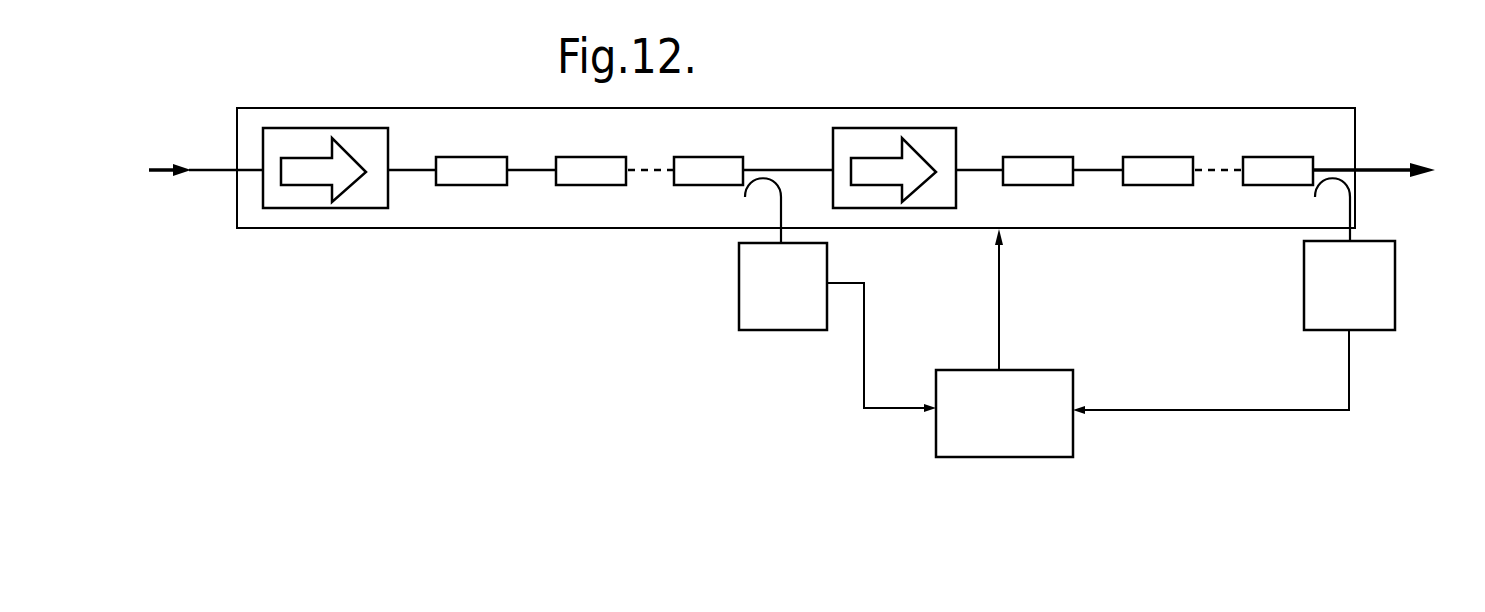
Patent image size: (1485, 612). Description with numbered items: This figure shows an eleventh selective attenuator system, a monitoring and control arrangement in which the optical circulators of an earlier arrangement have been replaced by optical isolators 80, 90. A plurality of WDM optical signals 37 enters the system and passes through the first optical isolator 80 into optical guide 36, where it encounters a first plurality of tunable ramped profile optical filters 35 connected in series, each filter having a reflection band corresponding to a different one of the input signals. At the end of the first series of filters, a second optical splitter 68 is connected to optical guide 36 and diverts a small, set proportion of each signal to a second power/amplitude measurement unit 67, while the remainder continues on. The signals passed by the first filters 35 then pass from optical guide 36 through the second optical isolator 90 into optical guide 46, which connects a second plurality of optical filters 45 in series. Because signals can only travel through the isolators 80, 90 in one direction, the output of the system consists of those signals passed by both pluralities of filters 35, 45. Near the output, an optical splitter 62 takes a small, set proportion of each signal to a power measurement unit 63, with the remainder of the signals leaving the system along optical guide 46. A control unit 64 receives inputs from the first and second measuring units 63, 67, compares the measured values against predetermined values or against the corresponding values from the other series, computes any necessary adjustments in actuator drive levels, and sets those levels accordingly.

The WDM optical signals 37 is at (161, 166).
The optical isolator 80 is at (367, 140).
The tunable ramped profile optical filters 35 is at (586, 157).
The optical guide 36 is at (805, 174).
The second optical splitter 68 is at (765, 168).
The optical isolator 90 is at (927, 140).
The second plurality of optical filters 45 is at (1157, 157).
The optical splitter 62 is at (1328, 165).
The optical guide 46 is at (1378, 173).
The second power/amplitude measurement unit 67 is at (800, 300).
The power measurement unit 63 is at (1366, 297).
The control unit 64 is at (1023, 424).